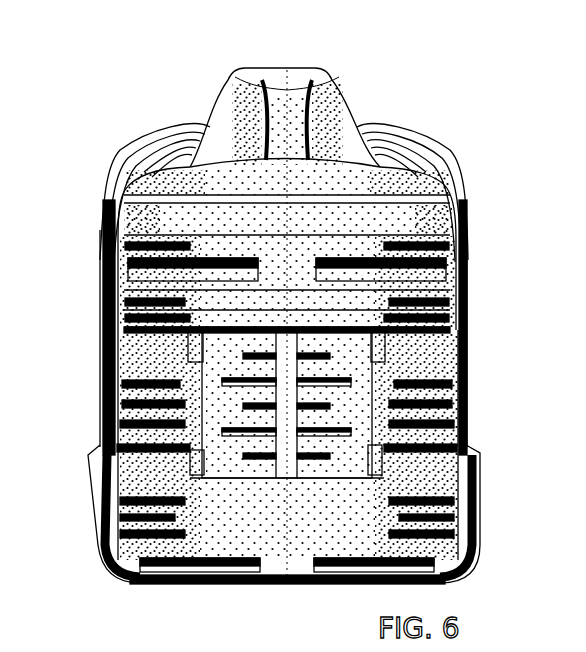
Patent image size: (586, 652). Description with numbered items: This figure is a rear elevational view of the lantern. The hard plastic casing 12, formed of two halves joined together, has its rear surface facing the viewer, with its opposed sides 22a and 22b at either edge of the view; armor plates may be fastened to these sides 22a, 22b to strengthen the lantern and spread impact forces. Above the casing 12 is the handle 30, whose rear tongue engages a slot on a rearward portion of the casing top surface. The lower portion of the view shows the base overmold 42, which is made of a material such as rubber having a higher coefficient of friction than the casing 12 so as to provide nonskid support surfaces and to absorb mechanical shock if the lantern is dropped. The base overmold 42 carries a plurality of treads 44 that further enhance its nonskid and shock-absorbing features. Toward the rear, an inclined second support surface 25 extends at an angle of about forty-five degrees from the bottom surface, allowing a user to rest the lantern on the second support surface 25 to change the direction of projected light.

The casing 12 is at (402, 152).
The side of casing 22a is at (470, 268).
The side of casing 22b is at (102, 245).
The inclined second support surface 25 is at (303, 545).
The handle 30 is at (289, 72).
The base overmold 42 is at (455, 343).
The treads 44 is at (470, 438).